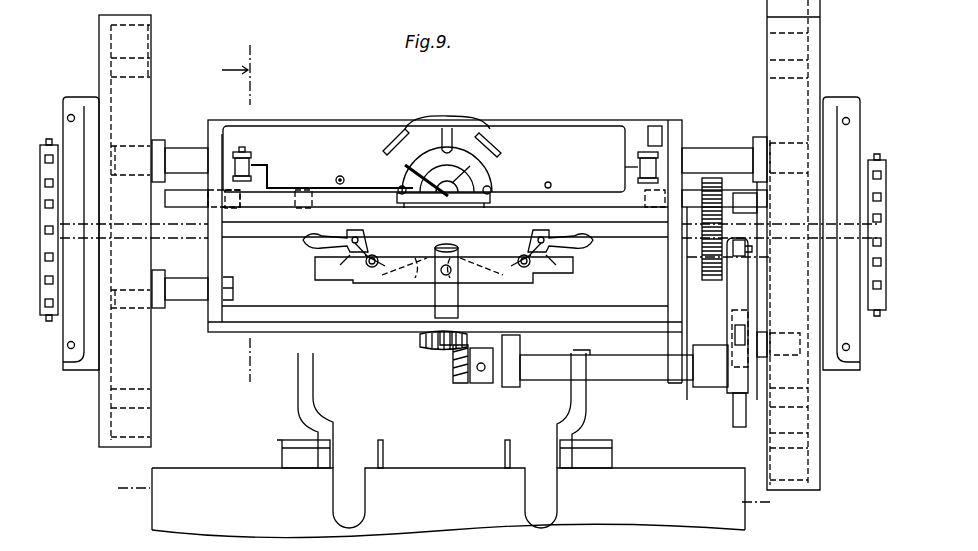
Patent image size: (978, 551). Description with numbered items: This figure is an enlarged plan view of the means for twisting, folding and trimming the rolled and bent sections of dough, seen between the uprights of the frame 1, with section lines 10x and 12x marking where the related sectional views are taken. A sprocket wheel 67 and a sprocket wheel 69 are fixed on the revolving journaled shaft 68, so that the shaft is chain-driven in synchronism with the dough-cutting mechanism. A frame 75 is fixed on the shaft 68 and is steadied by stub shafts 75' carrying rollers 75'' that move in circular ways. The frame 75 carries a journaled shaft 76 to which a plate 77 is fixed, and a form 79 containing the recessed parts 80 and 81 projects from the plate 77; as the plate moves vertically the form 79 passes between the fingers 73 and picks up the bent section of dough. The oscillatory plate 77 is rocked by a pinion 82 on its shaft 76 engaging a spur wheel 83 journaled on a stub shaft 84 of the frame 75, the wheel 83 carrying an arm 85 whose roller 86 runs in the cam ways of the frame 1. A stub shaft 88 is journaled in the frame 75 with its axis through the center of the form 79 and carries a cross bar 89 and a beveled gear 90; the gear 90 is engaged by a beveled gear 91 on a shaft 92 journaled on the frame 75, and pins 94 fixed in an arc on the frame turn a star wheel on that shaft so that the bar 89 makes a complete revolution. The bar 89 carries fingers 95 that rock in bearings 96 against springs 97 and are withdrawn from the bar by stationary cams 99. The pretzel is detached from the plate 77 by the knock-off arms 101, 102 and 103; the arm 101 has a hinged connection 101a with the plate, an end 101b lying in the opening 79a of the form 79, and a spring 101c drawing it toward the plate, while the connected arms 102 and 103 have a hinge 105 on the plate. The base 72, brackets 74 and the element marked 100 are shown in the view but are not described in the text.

The frame 1 is at (812, 426).
The sprocket wheel 67 is at (877, 160).
The journaled shaft 68 is at (640, 236).
The sprocket wheel 69 is at (48, 138).
The base 72 is at (163, 510).
The fingers 73 is at (505, 452).
The bracket 74 is at (287, 443).
The frame 75 is at (196, 306).
The steadying stub shafts 75' is at (459, 130).
The rollers 75'' is at (459, 272).
The journaled shaft 76 is at (722, 165).
The plate 77 is at (687, 195).
The form 79 is at (493, 184).
The opening 79a is at (415, 204).
The recessed part 80 is at (408, 170).
The recessed part 81 is at (460, 204).
The pinion 82 is at (724, 182).
The spur wheel 83 is at (707, 280).
The stub shaft 84 is at (650, 286).
The arm 85 is at (730, 330).
The roller 86 is at (782, 343).
The stub shaft 88 is at (456, 300).
The cross bar 89 is at (387, 281).
The beveled gear 90 is at (428, 348).
The beveled gear 91 is at (462, 386).
The shaft 92 is at (647, 384).
The studs or pins 94 is at (750, 296).
The fingers 95 is at (307, 247).
The bearings 96 is at (363, 240).
The springs 97 is at (348, 267).
The stationary cams 99 is at (312, 388).
The dial 100 is at (447, 112).
The knock-off arm 101 is at (270, 185).
The hinged connection 101a is at (243, 155).
The end 101b is at (450, 183).
The spring 101c is at (341, 176).
The knock-off arm 102 is at (548, 164).
The knock-off arm 103 is at (622, 190).
The hinge 105 is at (643, 140).
The section line 10x is at (282, 40).
The section line 12x is at (118, 499).